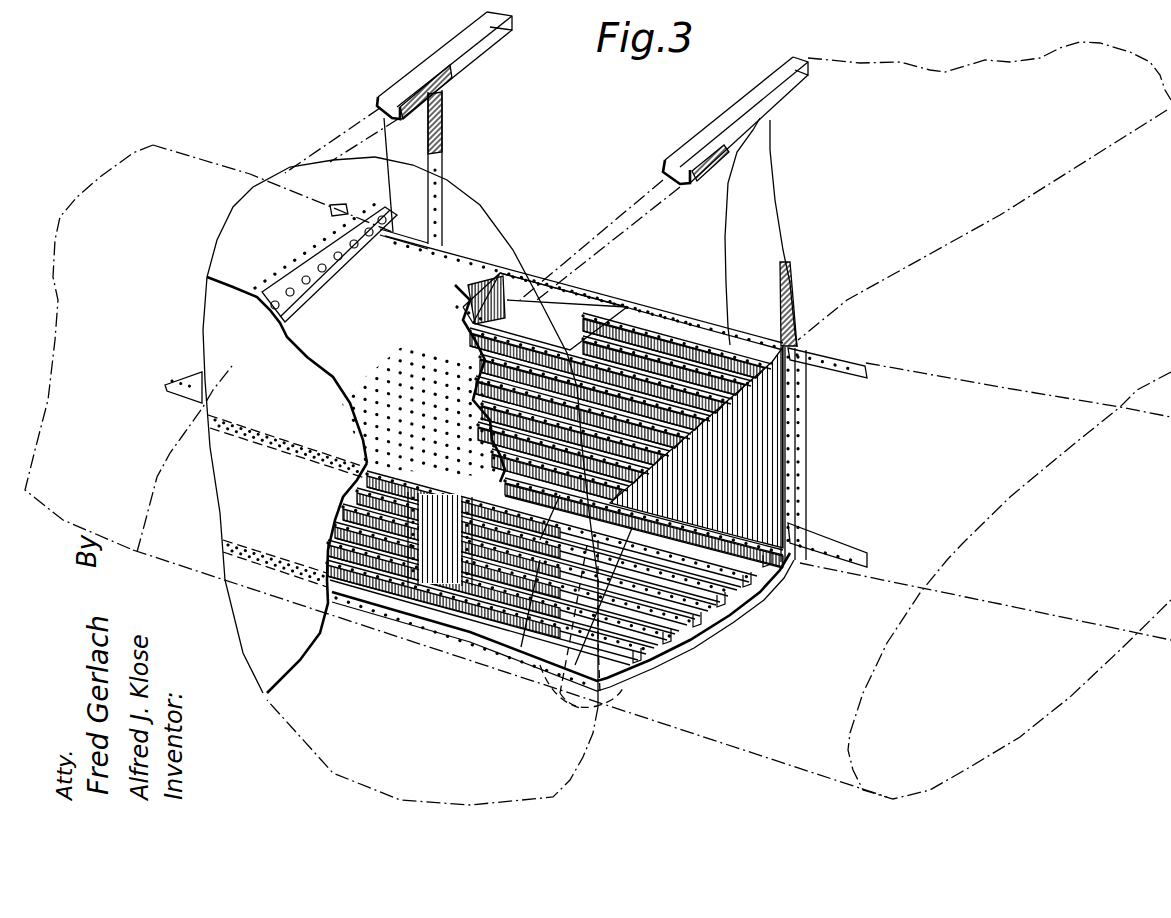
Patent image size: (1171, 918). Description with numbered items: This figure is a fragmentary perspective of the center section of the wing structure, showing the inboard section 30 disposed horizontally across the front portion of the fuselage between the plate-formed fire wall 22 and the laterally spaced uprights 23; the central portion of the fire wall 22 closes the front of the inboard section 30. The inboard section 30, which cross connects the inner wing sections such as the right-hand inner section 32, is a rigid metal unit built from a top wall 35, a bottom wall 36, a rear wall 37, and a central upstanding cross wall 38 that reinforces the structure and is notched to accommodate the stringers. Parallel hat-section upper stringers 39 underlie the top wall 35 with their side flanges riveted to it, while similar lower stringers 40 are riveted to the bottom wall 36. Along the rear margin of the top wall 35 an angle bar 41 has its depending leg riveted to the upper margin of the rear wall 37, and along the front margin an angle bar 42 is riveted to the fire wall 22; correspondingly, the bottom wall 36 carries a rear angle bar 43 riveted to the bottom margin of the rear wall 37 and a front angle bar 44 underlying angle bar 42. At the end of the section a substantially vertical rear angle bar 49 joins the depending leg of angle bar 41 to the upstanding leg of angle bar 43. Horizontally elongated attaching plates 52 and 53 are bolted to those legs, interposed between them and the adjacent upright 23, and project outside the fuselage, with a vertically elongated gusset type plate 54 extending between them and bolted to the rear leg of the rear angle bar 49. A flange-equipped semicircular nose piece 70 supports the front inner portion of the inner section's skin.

The fire wall 22 is at (266, 532).
The uprights 23 is at (783, 250).
The inboard section 30 is at (468, 247).
The inner section 32 is at (194, 170).
The top wall 35 is at (363, 363).
The bottom wall 36 is at (563, 622).
The rear wall 37 is at (767, 503).
The cross wall 38 is at (415, 605).
The upper stringers 39 is at (713, 407).
The lower stringers 40 is at (650, 657).
The angle bar 41 is at (653, 309).
The angle bar 42 is at (540, 540).
The angle bar 43 is at (706, 514).
The angle bar 44 is at (521, 647).
The rear angle bar 49 is at (787, 443).
The attaching plate 52 is at (853, 374).
The attaching plate 53 is at (837, 547).
The gusset type plate 54 is at (805, 417).
The nose piece 70 is at (563, 700).